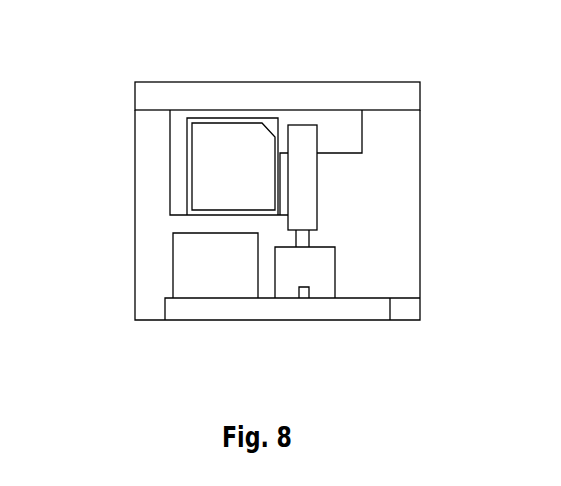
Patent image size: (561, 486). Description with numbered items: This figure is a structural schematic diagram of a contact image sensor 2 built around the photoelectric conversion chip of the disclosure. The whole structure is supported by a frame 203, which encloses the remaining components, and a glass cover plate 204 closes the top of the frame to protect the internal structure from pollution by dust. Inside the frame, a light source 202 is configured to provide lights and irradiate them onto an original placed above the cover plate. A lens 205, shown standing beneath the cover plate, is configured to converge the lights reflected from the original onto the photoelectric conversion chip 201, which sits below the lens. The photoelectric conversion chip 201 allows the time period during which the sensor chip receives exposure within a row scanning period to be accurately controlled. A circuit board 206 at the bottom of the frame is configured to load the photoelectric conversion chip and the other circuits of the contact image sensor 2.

The contact image sensor 2 is at (108, 155).
The photoelectric conversion chip 201 is at (305, 300).
The light source 202 is at (222, 130).
The frame 203 is at (135, 313).
The glass cover plate 204 is at (400, 97).
The lens 205 is at (312, 125).
The circuit board 206 is at (233, 313).